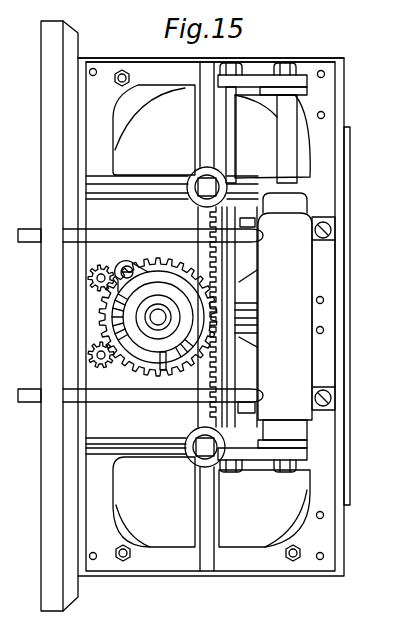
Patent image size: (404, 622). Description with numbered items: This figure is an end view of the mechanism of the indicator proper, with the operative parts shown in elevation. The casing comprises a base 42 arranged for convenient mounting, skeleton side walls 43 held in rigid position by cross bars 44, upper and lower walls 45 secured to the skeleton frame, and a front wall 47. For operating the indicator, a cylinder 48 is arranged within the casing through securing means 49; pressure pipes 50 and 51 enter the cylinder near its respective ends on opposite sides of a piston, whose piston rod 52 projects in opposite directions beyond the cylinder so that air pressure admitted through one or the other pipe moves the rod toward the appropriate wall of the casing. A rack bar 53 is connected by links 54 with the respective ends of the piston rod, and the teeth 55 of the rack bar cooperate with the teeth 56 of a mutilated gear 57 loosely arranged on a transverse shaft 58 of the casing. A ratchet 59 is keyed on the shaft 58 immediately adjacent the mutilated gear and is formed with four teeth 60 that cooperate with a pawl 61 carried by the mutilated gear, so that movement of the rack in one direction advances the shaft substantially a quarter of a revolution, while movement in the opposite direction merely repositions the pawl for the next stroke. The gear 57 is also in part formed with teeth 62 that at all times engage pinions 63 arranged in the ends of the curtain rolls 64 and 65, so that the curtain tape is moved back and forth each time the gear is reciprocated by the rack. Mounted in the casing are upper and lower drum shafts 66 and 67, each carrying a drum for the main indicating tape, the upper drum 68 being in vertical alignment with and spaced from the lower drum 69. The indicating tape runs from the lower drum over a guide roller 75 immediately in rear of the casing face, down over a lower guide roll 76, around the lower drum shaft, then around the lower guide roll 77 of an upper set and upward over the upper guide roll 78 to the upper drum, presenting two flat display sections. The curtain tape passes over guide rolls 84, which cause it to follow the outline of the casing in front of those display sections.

The base 42 is at (41, 128).
The skeleton side walls 43 is at (205, 553).
The cross bars 44 is at (293, 562).
The upper and lower walls 45 is at (300, 58).
The front wall 47 is at (350, 173).
The cylinder 48 is at (312, 270).
The securing means 49 is at (332, 232).
The pressure pipe 50 is at (27, 229).
The pressure pipe 51 is at (27, 402).
The piston rod 52 is at (280, 155).
The rack bar 53 is at (241, 123).
The links 54 is at (257, 75).
The teeth of rack bar 55 is at (222, 257).
The teeth of mutilated gear 56 is at (180, 262).
The mutilated gear 57 is at (163, 370).
The transverse shaft 58 is at (158, 317).
The ratchet 59 is at (135, 343).
The teeth of ratchet 60 is at (152, 277).
The pawl 61 is at (143, 260).
The teeth of gear 62 is at (99, 318).
The pinions 63 is at (110, 382).
The curtain roll 64 is at (90, 278).
The curtain roll 65 is at (90, 352).
The upper drum shaft 66 is at (190, 178).
The lower drum shaft 67 is at (195, 449).
The upper drum 68 is at (142, 118).
The lower drum 69 is at (128, 527).
The guide roller 75 is at (324, 330).
The lower guide roll 76 is at (324, 515).
The lower guide roll of upper set 77 is at (324, 300).
The upper guide roll 78 is at (325, 115).
The guide rolls 84 is at (93, 68).